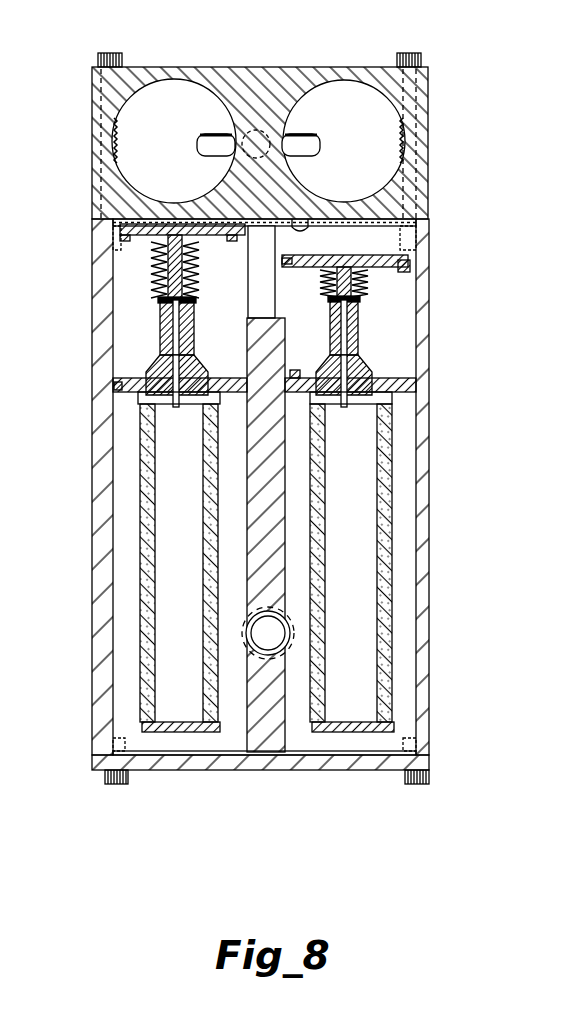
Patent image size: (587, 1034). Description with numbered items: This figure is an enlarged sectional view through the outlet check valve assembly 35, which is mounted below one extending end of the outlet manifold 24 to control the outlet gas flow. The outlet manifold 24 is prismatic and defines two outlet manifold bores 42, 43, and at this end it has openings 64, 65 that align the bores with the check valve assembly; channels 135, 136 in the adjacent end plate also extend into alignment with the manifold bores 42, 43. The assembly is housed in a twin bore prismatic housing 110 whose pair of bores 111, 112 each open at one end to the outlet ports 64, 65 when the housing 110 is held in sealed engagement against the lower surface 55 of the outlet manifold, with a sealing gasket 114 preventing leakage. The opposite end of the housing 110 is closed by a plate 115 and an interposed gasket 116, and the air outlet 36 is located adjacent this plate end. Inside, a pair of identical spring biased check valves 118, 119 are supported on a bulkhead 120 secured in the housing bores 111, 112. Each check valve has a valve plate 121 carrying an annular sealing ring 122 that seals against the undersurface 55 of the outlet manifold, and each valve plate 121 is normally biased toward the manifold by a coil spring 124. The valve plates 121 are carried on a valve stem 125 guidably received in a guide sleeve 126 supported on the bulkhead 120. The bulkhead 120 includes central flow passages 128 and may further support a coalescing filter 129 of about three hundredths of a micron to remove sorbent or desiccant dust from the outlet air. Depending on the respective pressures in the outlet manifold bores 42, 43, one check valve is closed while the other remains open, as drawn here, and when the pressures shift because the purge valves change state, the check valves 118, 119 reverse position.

The outlet manifold 24 is at (271, 114).
The outlet check valve assembly 35 is at (430, 455).
The air outlet 36 is at (246, 641).
The outlet manifold bore 42 is at (395, 108).
The outlet manifold bore 43 is at (150, 94).
The lower wall or face of the outlet manifold 55 is at (303, 218).
The outlet port 64 is at (397, 193).
The outlet port 65 is at (126, 206).
The twin bore prismatic housing 110 is at (269, 424).
The housing bore 111 is at (407, 533).
The housing bore 112 is at (109, 533).
The sealing gasket 114 is at (418, 222).
The plate 115 is at (392, 771).
The gasket 116 is at (435, 752).
The spring biased check valve 118 is at (366, 318).
The spring biased check valve 119 is at (254, 466).
The bulkhead 120 is at (116, 388).
The valve plate 121 is at (127, 243).
The annular sealing ring 122 is at (120, 223).
The coil spring 124 is at (185, 273).
The valve stem 125 is at (182, 284).
The guide sleeve 126 is at (168, 323).
The central flow passage 128 is at (204, 372).
The coalescing filter 129 is at (140, 455).
The channel 135 is at (202, 135).
The channel 136 is at (300, 136).